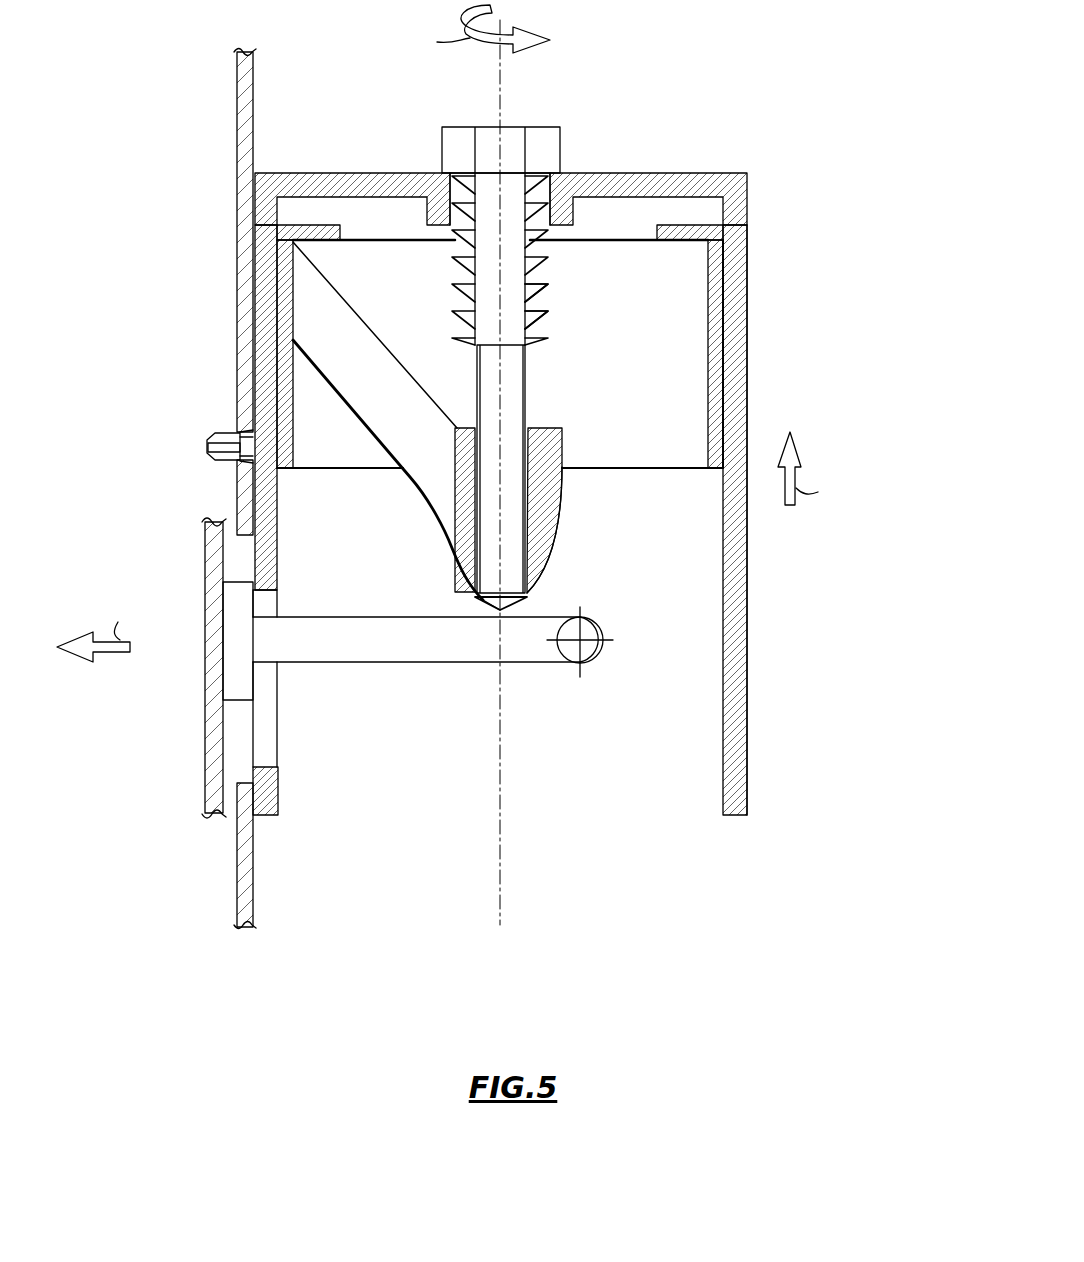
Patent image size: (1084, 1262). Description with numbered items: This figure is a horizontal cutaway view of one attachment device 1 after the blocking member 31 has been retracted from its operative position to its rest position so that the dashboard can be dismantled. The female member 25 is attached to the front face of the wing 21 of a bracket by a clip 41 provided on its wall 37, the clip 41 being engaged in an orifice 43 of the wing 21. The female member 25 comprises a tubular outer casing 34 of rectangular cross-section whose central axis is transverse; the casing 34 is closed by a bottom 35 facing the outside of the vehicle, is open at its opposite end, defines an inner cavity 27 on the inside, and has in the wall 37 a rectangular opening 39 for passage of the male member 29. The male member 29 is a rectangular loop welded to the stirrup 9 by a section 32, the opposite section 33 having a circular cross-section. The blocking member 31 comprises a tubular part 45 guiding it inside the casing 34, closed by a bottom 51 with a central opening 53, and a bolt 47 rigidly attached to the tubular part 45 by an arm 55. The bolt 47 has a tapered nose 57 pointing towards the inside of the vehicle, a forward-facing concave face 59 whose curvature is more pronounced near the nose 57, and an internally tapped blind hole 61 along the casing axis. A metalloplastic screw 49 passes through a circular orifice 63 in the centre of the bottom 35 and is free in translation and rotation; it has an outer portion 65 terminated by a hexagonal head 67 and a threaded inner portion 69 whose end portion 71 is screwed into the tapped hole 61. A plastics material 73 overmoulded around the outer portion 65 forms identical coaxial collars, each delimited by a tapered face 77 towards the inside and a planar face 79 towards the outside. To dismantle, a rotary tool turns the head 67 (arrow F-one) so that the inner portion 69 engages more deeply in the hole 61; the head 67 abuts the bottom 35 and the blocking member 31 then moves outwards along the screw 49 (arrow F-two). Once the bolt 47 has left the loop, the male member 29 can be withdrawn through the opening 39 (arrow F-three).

The attachment device 1 is at (494, 467).
The stirrup 9 is at (213, 743).
The wing 21 is at (243, 150).
The female member 25 is at (501, 473).
The inner cavity 27 is at (718, 584).
The male member 29 is at (237, 673).
The blocking member 31 is at (717, 307).
The section 32 is at (238, 618).
The section 33 is at (592, 630).
The tubular outer casing 34 is at (735, 368).
The bottom 35 is at (637, 182).
The wall 37 is at (265, 335).
The opening 39 is at (267, 763).
The clip 41 is at (224, 434).
The orifice 43 is at (233, 461).
The tubular part 45 is at (715, 342).
The bolt 47 is at (545, 455).
The metalloplastic screw 49 is at (506, 367).
The bottom 51 is at (678, 233).
The central opening 53 is at (347, 230).
The arm 55 is at (390, 425).
The tapered nose 57 is at (500, 612).
The concave face 59 is at (540, 538).
The internally tapped blind hole 61 is at (477, 500).
The circular orifice 63 is at (537, 172).
The outer portion 65 is at (480, 192).
The hexagonal head 67 is at (512, 128).
The inner portion 69 is at (510, 427).
The end portion 71 is at (505, 588).
The plastics material 73 is at (537, 305).
The tapered face 77 is at (535, 340).
The planar face 79 is at (460, 330).